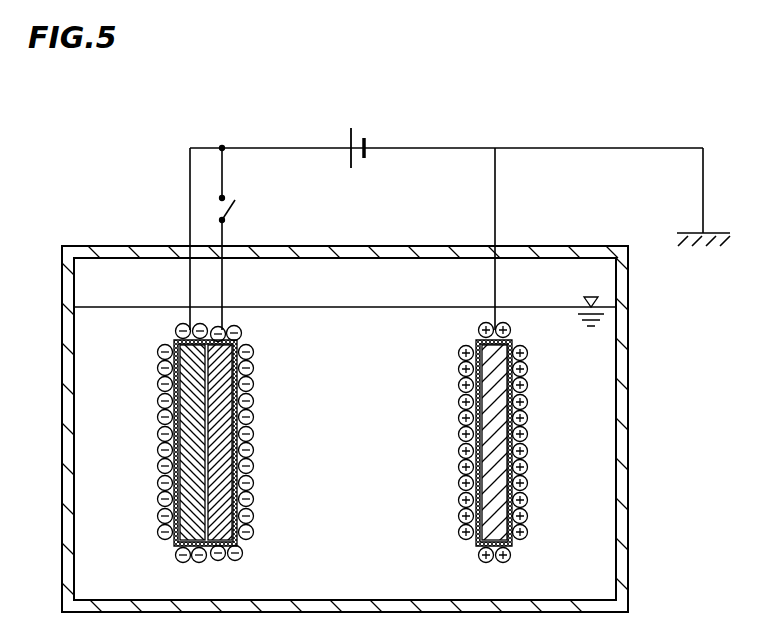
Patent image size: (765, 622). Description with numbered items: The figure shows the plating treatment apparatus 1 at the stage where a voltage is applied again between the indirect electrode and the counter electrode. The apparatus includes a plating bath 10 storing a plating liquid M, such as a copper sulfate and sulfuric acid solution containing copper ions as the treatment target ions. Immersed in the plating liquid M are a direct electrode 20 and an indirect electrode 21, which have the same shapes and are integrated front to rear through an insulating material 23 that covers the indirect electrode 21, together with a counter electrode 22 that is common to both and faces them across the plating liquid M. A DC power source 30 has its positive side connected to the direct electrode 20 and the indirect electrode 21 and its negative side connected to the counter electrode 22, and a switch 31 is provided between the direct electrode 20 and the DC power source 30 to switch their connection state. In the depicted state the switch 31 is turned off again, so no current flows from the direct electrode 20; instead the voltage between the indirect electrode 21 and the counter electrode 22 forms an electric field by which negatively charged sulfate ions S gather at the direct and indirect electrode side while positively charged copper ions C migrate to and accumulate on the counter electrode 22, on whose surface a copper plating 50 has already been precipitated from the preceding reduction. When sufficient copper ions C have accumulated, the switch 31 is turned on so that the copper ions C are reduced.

The plating treatment apparatus 1 is at (298, 116).
The plating bath 10 is at (622, 450).
The plating liquid M is at (603, 357).
The direct electrode 20 is at (224, 435).
The indirect electrode 21 is at (187, 430).
The counter electrode 22 is at (500, 433).
The insulating material 23 is at (177, 492).
The DC power source 30 is at (366, 140).
The switch 31 is at (232, 212).
The copper plating 50 is at (476, 545).
The sulfate ions S is at (240, 556).
The copper ions C is at (462, 501).